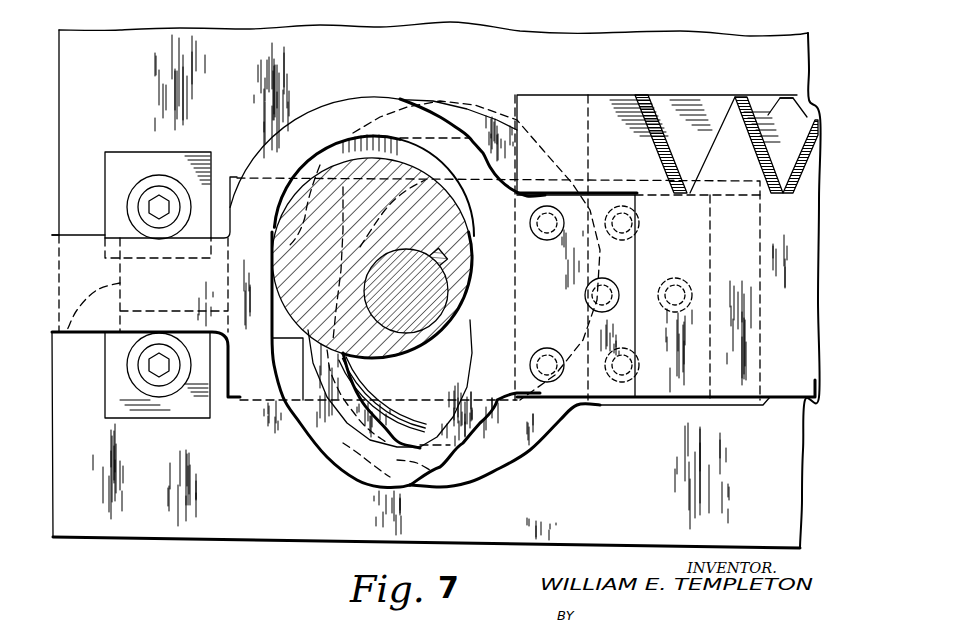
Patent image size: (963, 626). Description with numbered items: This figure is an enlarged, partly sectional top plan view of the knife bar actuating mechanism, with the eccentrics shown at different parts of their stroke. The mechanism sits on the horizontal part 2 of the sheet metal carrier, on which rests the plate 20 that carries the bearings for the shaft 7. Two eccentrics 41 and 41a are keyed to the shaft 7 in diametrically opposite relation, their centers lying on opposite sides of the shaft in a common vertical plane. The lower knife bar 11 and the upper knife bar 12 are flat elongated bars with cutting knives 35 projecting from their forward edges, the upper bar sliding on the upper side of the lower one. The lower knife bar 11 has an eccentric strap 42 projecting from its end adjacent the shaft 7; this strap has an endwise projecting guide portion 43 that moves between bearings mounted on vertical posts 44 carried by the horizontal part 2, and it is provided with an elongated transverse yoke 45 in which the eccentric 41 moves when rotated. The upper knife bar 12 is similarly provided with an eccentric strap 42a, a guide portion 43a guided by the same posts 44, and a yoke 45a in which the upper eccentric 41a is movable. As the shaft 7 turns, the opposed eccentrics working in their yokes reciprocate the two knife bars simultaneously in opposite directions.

The horizontal part 2 is at (253, 47).
The shaft 7 is at (406, 290).
The knife bar 11 is at (587, 127).
The knife bar 12 is at (607, 117).
The plate 20 is at (233, 232).
The cutting knives 35 is at (733, 120).
The eccentric 41 is at (450, 383).
The eccentric 41a is at (405, 180).
The eccentric strap 42 is at (760, 400).
The eccentric strap 42a is at (610, 263).
The guide portion 43 is at (72, 324).
The guide portion 43a is at (78, 263).
The vertical posts 44 is at (130, 200).
The yoke 45 is at (477, 123).
The yoke 45a is at (322, 130).